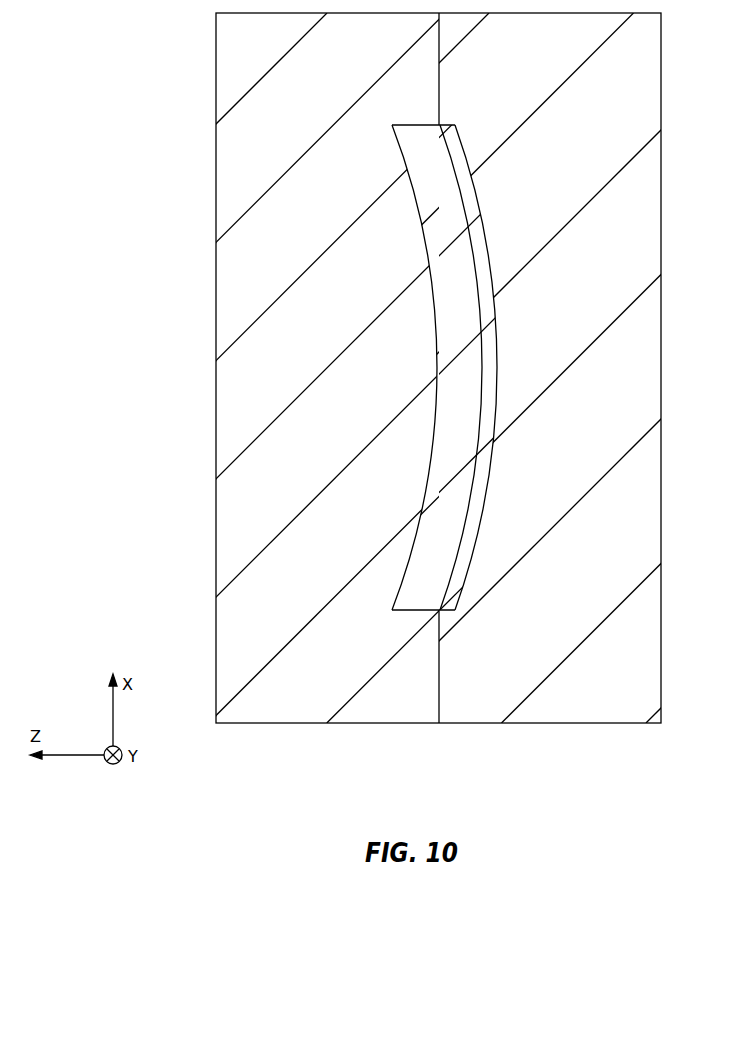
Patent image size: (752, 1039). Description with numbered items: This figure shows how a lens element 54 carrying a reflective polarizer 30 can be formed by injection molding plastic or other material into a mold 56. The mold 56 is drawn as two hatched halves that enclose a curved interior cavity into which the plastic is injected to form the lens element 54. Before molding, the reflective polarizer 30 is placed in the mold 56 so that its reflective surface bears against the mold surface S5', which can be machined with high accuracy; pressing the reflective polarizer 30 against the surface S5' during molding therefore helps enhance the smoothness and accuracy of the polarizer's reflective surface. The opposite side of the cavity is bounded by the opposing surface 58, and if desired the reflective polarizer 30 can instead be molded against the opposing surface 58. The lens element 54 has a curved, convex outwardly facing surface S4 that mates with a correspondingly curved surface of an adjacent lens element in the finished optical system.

The reflective polarizer 30 is at (462, 367).
The outwardly facing surface S4 is at (478, 481).
The mold surface S5' is at (503, 367).
The lens element 54 is at (455, 517).
The opposing surface 58 is at (430, 347).
The mold 56 is at (379, 710).